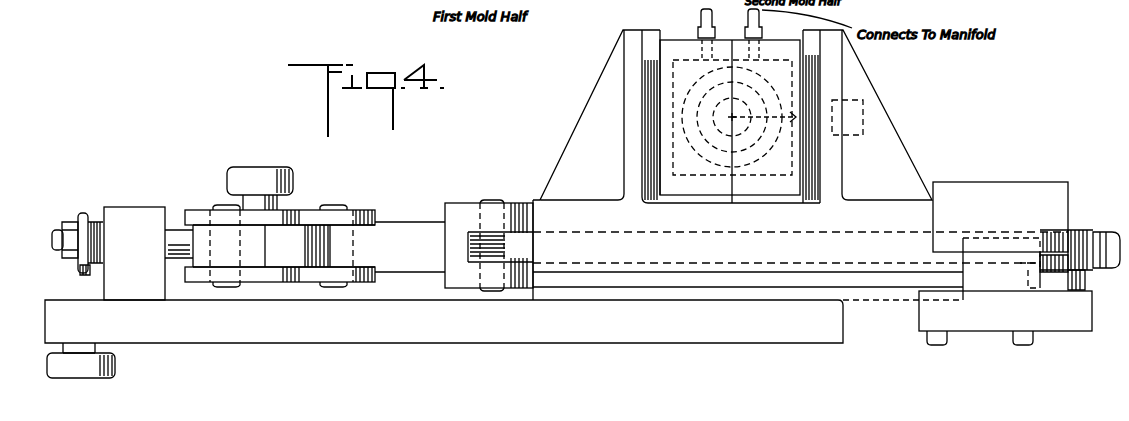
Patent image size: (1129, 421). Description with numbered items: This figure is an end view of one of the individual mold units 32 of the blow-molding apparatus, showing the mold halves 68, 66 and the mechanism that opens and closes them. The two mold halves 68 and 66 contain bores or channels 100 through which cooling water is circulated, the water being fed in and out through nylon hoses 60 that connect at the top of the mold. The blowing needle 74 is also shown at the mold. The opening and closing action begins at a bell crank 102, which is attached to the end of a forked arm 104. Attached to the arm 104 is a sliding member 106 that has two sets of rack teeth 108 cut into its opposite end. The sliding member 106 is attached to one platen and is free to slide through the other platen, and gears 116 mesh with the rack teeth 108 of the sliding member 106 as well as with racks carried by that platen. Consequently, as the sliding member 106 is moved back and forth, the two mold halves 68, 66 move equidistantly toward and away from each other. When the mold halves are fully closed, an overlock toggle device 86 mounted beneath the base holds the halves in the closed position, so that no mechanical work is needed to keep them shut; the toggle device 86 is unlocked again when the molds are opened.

The mold unit 32 is at (623, 141).
The nylon hose 60 is at (719, 22).
The mold half 66 is at (671, 46).
The mold half 68 is at (800, 66).
The blowing needle 74 is at (739, 120).
The overlock toggle device 86 is at (115, 366).
The bores or channels 100 is at (749, 43).
The bell crank 102 is at (291, 173).
The forked arm 104 is at (194, 208).
The sliding member 106 is at (857, 241).
The rack teeth 108 is at (1110, 231).
The gear 116 is at (1088, 270).